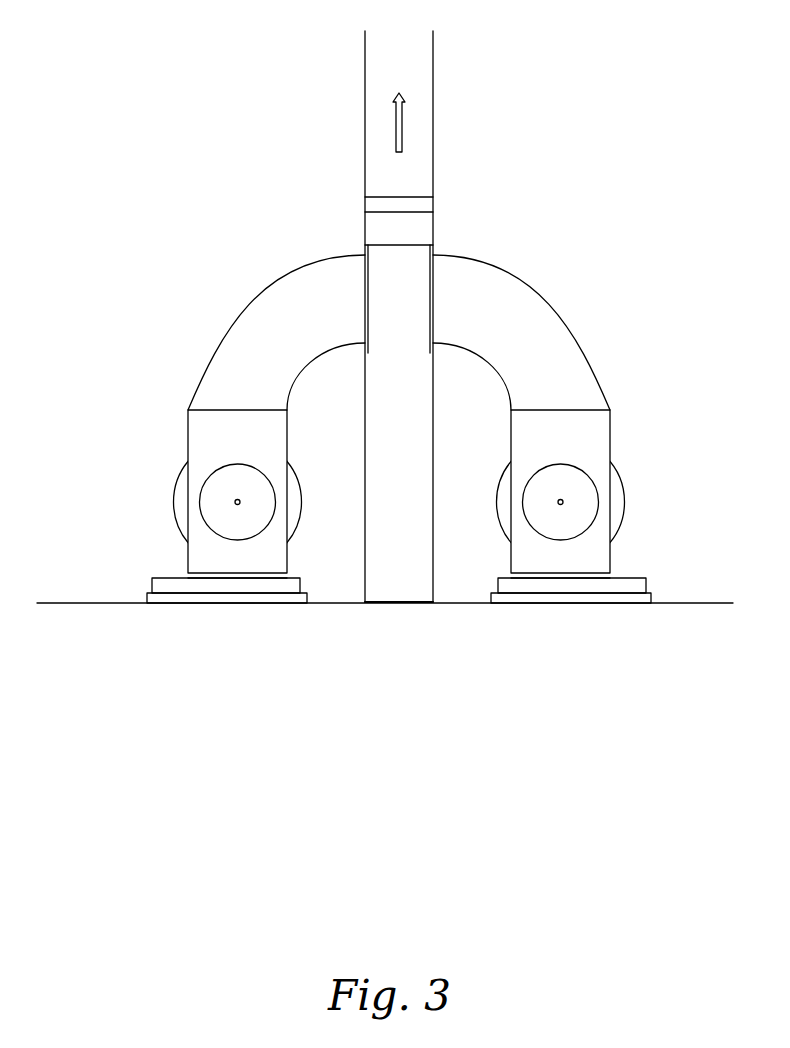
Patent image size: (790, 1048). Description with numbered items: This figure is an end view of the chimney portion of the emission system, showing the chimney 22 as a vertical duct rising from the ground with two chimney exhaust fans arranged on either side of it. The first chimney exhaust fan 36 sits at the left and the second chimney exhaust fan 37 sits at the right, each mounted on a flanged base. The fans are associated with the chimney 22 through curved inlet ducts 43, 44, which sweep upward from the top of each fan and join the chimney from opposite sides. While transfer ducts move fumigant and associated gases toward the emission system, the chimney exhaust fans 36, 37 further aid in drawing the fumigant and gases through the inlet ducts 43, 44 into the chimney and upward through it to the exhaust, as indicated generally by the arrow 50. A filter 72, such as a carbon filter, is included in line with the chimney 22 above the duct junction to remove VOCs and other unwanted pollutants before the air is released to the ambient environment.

The chimney 22 is at (433, 75).
The arrow 50 is at (396, 121).
The filter 72 is at (365, 206).
The inlet duct 43 is at (260, 296).
The inlet duct 44 is at (539, 298).
The first chimney exhaust fan 36 is at (217, 496).
The second chimney exhaust fan 37 is at (580, 495).